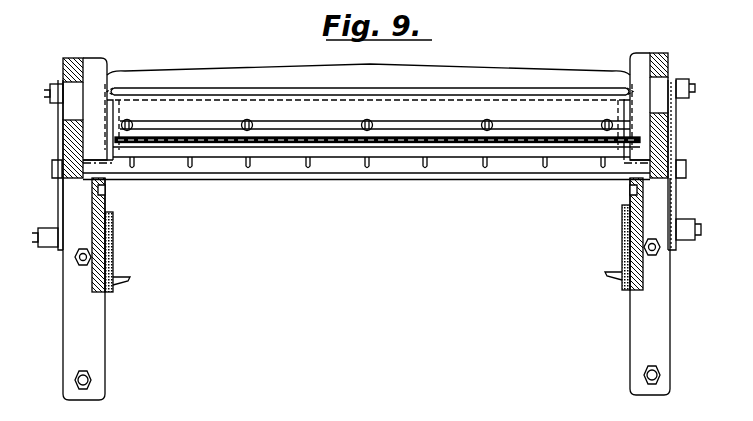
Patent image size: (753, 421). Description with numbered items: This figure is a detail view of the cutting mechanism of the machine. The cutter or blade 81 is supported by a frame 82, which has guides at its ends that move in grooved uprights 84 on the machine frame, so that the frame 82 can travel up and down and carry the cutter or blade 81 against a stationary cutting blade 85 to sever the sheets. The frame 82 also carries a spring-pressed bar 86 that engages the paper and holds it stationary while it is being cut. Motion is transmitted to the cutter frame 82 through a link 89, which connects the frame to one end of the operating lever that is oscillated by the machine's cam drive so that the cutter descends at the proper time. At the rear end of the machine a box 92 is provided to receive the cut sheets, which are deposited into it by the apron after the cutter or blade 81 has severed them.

The cutter or blade 81 is at (157, 145).
The frame 82 is at (192, 88).
The grooved uprights 84 is at (60, 154).
The stationary cutting blade 85 is at (397, 158).
The spring-pressed bar 86 is at (335, 144).
The link 89 is at (58, 135).
The box 92 is at (92, 277).